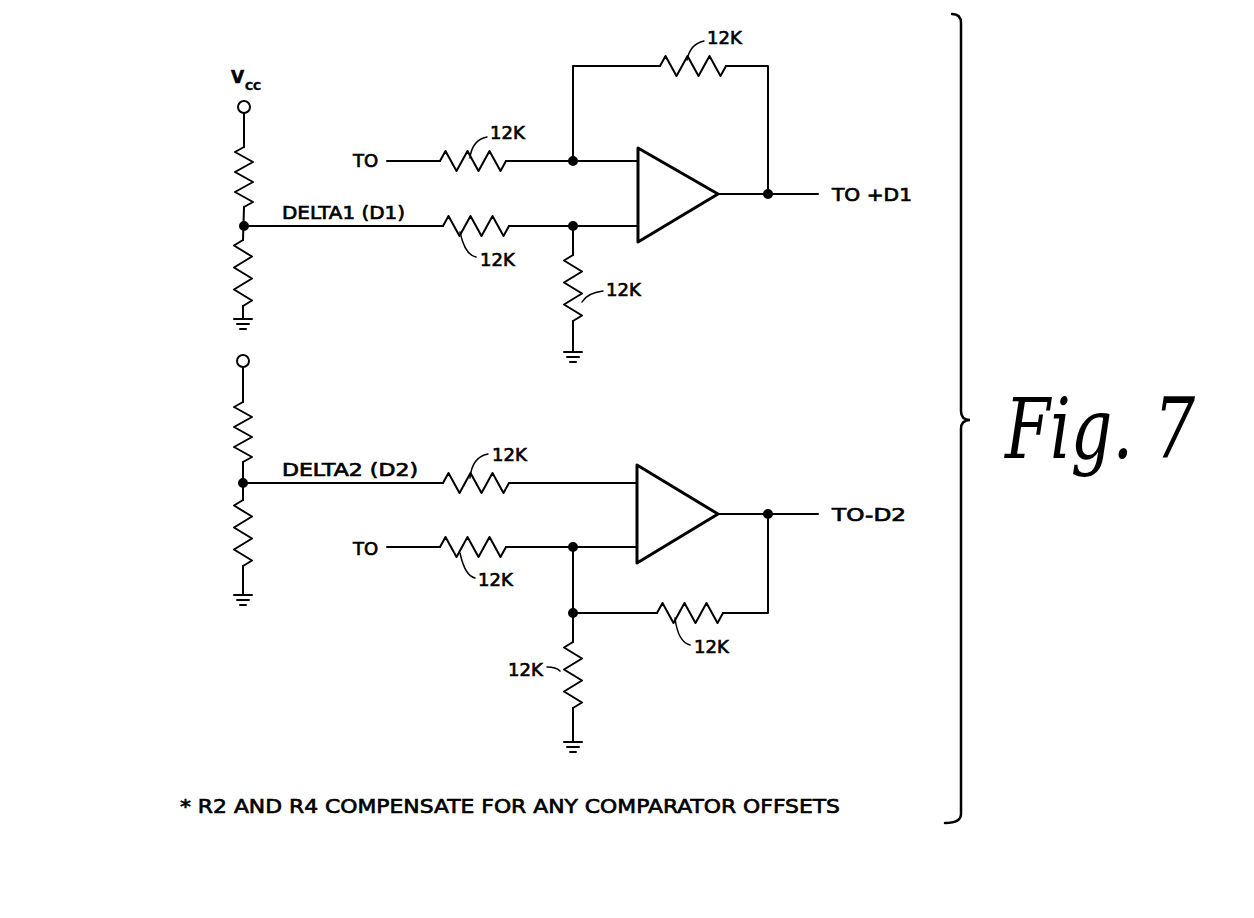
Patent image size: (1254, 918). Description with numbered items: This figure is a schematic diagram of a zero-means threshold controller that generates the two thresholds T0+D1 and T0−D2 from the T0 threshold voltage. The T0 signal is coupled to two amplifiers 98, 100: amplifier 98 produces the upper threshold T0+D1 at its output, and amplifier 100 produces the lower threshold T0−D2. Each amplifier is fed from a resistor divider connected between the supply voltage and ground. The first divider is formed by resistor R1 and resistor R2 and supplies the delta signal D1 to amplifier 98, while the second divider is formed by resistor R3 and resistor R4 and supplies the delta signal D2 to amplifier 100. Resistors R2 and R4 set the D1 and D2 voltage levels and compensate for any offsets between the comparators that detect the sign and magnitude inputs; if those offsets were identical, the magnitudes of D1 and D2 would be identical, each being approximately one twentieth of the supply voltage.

The amplifier 98 is at (677, 170).
The amplifier 100 is at (677, 488).
The resistor R1 is at (229, 165).
The resistor R2 is at (231, 240).
The resistor R3 is at (229, 428).
The resistor R4 is at (232, 521).